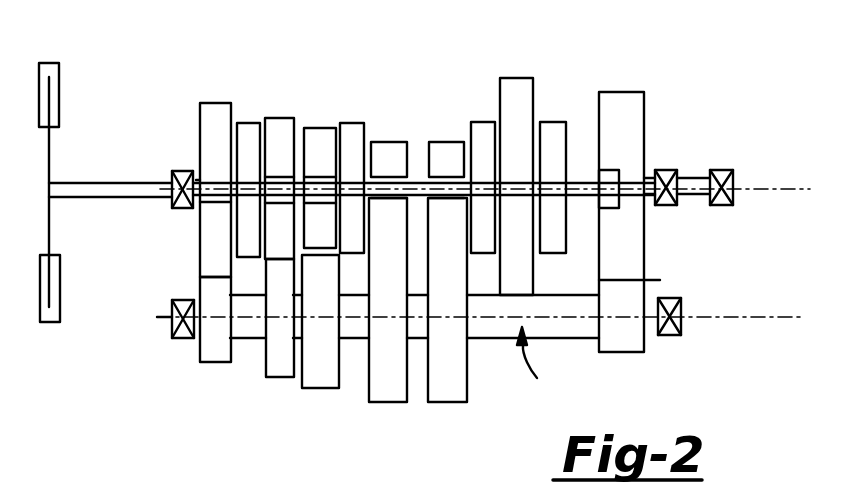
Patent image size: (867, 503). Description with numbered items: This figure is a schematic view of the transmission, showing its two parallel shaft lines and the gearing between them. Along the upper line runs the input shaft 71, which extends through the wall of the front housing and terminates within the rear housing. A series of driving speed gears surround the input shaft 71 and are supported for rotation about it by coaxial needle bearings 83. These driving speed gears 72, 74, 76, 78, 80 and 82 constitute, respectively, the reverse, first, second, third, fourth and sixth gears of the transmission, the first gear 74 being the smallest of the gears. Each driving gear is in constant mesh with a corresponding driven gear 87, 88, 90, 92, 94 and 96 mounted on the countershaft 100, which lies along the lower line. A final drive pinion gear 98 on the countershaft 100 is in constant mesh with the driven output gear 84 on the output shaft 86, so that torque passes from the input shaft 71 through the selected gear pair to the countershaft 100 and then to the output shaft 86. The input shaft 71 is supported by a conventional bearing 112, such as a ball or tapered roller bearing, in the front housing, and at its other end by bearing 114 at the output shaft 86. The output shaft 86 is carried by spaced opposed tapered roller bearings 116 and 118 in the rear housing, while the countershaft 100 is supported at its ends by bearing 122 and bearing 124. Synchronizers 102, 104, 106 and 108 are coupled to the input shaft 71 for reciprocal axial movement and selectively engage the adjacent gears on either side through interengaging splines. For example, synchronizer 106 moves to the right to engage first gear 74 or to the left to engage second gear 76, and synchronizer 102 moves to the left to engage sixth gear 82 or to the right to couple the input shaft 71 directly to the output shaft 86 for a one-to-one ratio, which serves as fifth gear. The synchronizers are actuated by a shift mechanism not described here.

The input shaft 71 is at (95, 183).
The reverse driving speed gear 72 is at (437, 142).
The first gear 74 is at (386, 142).
The second gear 76 is at (318, 128).
The third driving speed gear 78 is at (277, 118).
The fourth driving speed gear 80 is at (212, 103).
The sixth gear 82 is at (518, 78).
The coaxial needle bearings 83 is at (199, 178).
The driven output gear 84 is at (632, 92).
The output shaft 86 is at (693, 195).
The driven gear 87 is at (441, 402).
The driven gear 88 is at (392, 402).
The driven gear 90 is at (326, 388).
The driven gear 92 is at (278, 377).
The driven gear 94 is at (216, 362).
The driven gear 96 is at (535, 295).
The final drive pinion gear 98 is at (660, 280).
The countershaft 100 is at (544, 368).
The synchronizer 102 is at (553, 122).
The synchronizer 104 is at (481, 122).
The synchronizer 106 is at (352, 123).
The synchronizer 108 is at (245, 123).
The bearing 112 is at (186, 208).
The bearing 114 is at (610, 170).
The tapered roller bearing 116 is at (667, 170).
The tapered roller bearing 118 is at (727, 170).
The bearing 122 is at (183, 338).
The bearing 124 is at (676, 335).